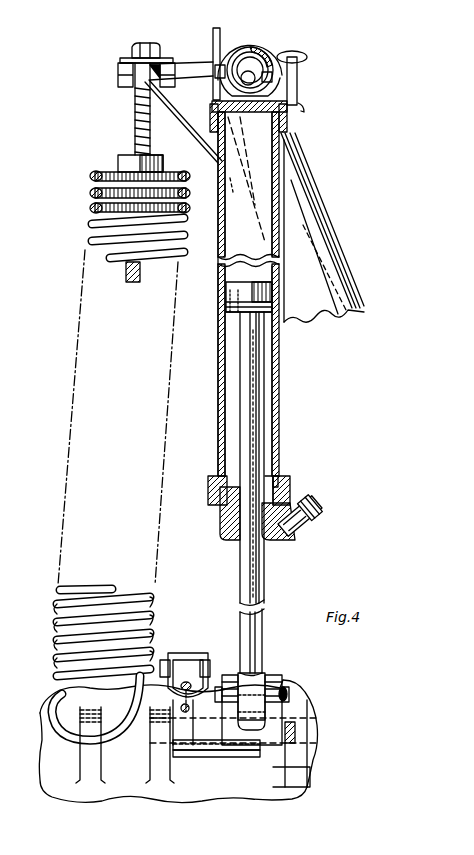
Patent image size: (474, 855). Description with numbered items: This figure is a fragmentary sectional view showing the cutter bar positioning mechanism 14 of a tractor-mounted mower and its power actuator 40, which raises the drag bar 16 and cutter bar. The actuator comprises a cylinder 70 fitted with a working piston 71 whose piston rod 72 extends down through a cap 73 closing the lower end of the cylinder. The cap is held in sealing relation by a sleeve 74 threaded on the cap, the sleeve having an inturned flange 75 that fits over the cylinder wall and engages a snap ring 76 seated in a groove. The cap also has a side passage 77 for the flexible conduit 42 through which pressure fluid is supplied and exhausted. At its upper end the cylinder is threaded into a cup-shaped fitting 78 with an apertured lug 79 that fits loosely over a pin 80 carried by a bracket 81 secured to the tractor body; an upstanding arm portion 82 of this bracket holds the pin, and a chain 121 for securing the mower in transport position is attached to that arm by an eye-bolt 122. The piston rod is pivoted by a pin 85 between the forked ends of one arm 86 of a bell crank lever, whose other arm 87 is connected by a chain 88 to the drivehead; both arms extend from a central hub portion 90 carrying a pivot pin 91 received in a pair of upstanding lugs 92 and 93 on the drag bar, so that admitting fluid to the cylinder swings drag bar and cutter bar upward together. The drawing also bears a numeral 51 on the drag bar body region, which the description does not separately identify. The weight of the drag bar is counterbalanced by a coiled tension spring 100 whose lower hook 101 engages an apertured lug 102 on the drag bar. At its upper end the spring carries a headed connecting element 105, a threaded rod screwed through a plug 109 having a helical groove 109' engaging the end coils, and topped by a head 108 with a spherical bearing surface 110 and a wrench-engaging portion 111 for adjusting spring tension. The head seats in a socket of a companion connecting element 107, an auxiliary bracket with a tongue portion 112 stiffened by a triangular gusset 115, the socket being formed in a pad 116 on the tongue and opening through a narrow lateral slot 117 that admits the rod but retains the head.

The cutter bar positioning mechanism 14 is at (284, 378).
The drag bar 16 is at (296, 672).
The pressure fluid operated actuator 40 is at (216, 416).
The flexible conduit 42 is at (322, 504).
The base 51 is at (281, 792).
The cylinder 70 is at (281, 358).
The working piston 71 is at (276, 290).
The piston rod 72 is at (240, 575).
The cap 73 is at (220, 530).
The sleeve 74 is at (292, 488).
The inturned flange 75 is at (286, 476).
The snap ring 76 is at (210, 476).
The passage 77 is at (288, 538).
The cup-shaped fitting 78 is at (292, 124).
The axially projecting lug 79 is at (272, 44).
The pin 80 is at (252, 68).
The bracket 81 is at (360, 283).
The upstanding arm portion 82 is at (318, 232).
The pin 85 is at (290, 694).
The bell crank lever arm 86 is at (269, 674).
The bell crank lever arm 87 is at (194, 750).
The chain 88 is at (188, 660).
The central hub portion 90 is at (228, 757).
The pivot pin 91 is at (296, 736).
The upstanding lug 92 is at (312, 767).
The upstanding lug 93 is at (150, 758).
The coiled tension spring 100 is at (96, 593).
The hook 101 is at (55, 712).
The apertured lug 102 is at (80, 752).
The headed connecting element 105 is at (134, 130).
The companion connecting element 107 is at (197, 60).
The head 108 is at (139, 50).
The plug 109 is at (124, 163).
The helical groove 109' is at (120, 198).
The bearing surface 110 is at (118, 60).
The wrench-engaging portion 111 is at (147, 43).
The tongue portion 112 is at (176, 63).
The triangular gusset 115 is at (190, 133).
The pad 116 is at (118, 80).
The slot 117 is at (153, 90).
The chain 121 is at (298, 84).
The eye-bolt 122 is at (307, 58).